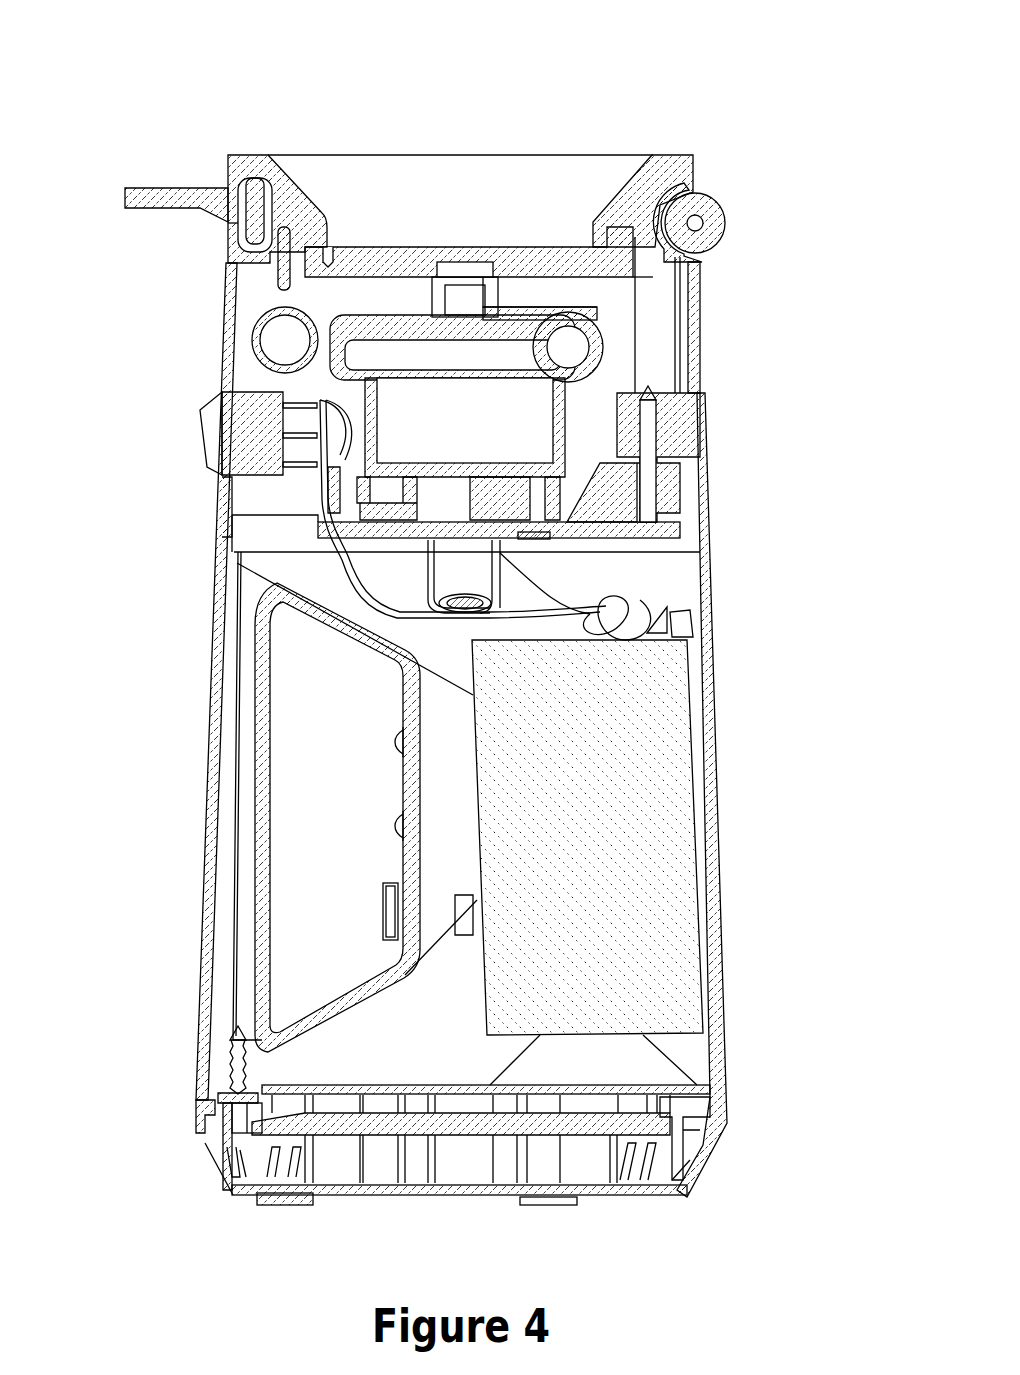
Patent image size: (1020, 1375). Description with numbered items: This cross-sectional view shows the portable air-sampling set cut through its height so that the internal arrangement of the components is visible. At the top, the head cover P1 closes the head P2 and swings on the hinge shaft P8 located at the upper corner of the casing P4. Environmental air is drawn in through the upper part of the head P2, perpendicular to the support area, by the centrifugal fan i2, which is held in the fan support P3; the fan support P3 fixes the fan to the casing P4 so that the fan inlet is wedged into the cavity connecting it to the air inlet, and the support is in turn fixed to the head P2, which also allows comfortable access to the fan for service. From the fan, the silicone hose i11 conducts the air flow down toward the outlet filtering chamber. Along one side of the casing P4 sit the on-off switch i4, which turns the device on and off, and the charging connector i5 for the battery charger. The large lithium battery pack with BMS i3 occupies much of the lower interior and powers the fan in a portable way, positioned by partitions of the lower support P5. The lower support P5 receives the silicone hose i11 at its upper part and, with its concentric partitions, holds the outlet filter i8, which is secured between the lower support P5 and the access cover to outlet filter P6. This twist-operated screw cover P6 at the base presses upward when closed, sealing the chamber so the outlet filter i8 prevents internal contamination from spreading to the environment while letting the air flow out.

The head cover P1 is at (675, 157).
The hinge shaft P8 is at (700, 217).
The head P2 is at (700, 330).
The centrifugal fan i2 is at (563, 422).
The fan support P3 is at (615, 512).
The casing P4 is at (705, 580).
The silicone hose i11 is at (255, 352).
The on-off switch i4 is at (238, 450).
The lithium battery pack with BMS i3 is at (675, 782).
The charging connector i5 is at (388, 932).
The lower support P5 is at (388, 1090).
The outlet filter i8 is at (380, 1126).
The access cover to outlet filter P6 is at (675, 1189).